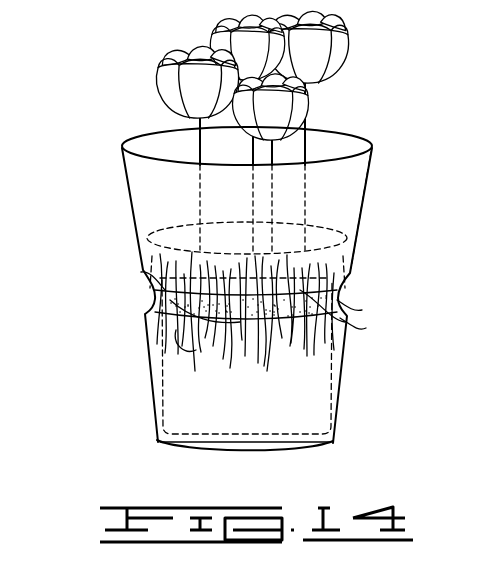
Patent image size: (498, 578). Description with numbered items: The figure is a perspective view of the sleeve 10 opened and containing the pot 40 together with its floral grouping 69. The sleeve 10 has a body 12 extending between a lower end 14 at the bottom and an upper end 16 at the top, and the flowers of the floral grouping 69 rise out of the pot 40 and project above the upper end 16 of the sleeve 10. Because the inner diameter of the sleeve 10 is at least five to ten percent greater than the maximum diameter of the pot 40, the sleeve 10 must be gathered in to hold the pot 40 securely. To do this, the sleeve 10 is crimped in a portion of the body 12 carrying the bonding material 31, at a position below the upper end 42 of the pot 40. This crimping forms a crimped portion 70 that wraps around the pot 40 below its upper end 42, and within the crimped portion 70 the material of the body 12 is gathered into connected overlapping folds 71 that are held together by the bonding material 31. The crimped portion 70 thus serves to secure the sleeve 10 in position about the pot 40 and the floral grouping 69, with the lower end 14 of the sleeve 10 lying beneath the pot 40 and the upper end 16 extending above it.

The sleeve 10 is at (222, 285).
The body 12 is at (117, 378).
The lower end 14 is at (294, 453).
The upper end 16 is at (333, 130).
The bonding material 31 is at (341, 298).
The pot 40 is at (342, 374).
The upper end 42 is at (368, 203).
The floral grouping 69 is at (351, 74).
The crimped portion 70 is at (149, 298).
The connected overlapping folds 71 is at (141, 272).